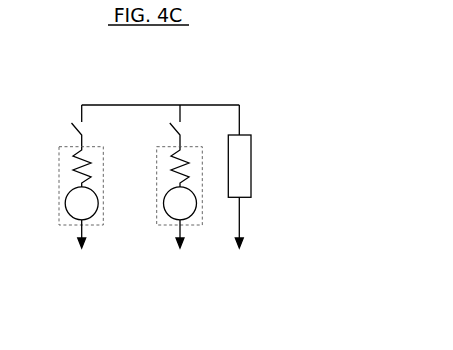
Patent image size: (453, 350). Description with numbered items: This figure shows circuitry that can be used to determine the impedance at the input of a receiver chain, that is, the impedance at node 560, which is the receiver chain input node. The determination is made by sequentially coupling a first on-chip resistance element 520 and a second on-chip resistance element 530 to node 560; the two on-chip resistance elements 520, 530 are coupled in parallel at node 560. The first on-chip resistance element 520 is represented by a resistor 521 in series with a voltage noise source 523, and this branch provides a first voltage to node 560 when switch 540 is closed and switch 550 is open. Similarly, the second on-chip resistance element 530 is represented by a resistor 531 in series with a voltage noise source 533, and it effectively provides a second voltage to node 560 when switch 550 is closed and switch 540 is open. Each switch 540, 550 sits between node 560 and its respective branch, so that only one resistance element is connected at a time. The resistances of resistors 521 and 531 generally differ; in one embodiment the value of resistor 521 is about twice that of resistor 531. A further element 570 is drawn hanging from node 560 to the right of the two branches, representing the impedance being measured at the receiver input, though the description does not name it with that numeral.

The first on-chip resistance element 520 is at (63, 227).
The resistor 521 is at (70, 162).
The voltage noise source 523 is at (66, 203).
The second on-chip resistance element 530 is at (163, 227).
The resistor 531 is at (168, 167).
The voltage noise source 533 is at (164, 206).
The switch 540 is at (70, 127).
The switch 550 is at (168, 127).
The node 560 is at (153, 103).
The load resistor 570 is at (252, 170).